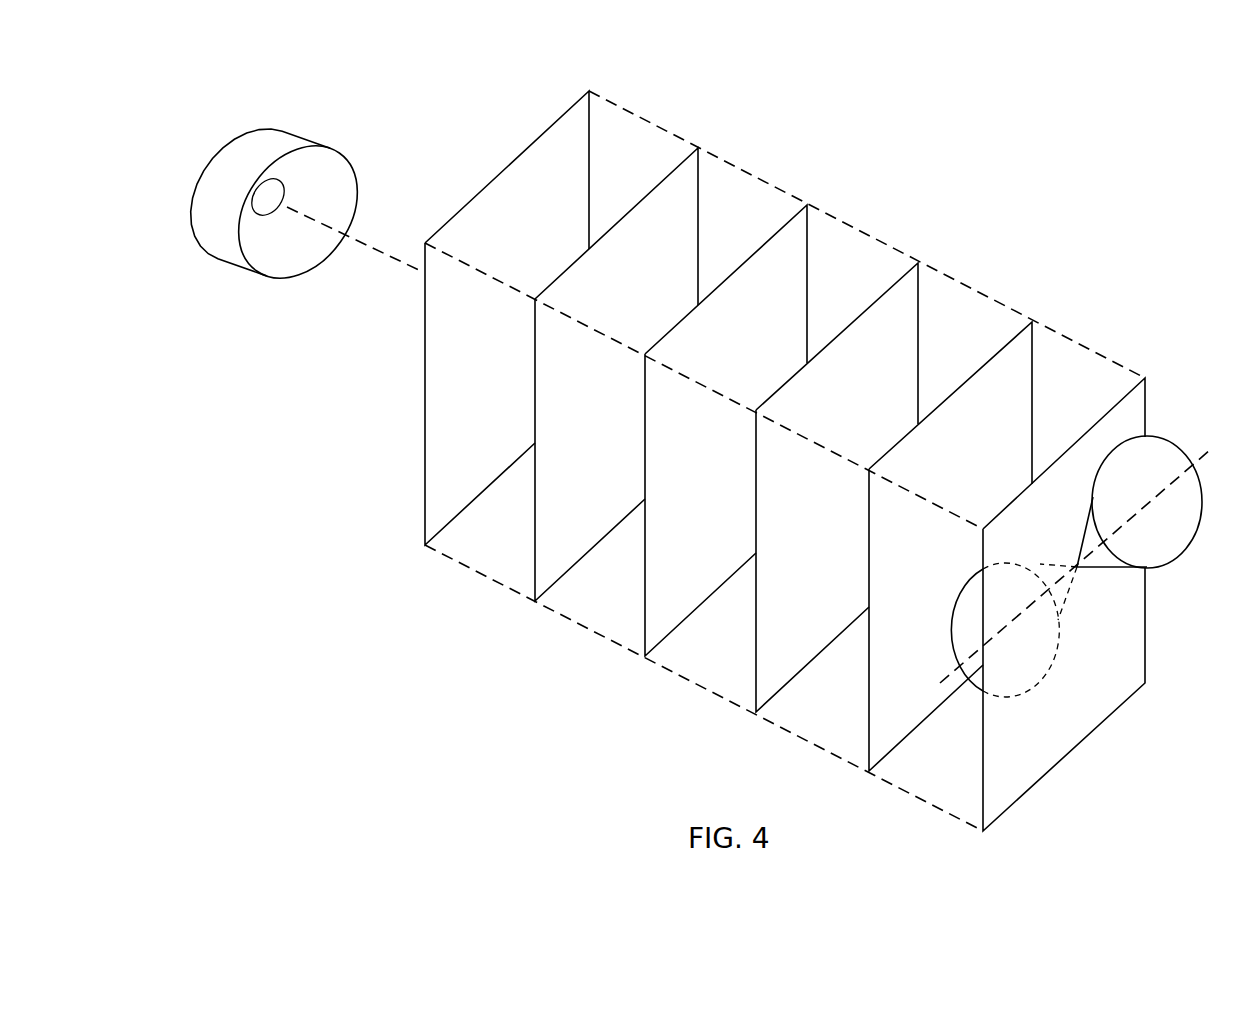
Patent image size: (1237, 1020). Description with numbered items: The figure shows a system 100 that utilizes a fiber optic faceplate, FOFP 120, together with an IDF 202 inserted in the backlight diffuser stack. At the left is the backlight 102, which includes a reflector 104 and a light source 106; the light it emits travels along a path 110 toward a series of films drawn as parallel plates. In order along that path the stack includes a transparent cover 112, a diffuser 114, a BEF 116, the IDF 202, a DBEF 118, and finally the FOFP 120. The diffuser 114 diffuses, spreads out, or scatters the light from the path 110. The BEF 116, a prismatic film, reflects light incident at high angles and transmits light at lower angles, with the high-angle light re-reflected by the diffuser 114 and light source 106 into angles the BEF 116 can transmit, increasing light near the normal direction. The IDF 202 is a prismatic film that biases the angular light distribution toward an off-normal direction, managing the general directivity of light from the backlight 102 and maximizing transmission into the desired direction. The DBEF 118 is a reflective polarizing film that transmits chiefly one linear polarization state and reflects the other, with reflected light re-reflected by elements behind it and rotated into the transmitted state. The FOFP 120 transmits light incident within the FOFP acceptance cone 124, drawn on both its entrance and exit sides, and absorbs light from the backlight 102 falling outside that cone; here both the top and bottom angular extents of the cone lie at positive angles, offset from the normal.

The system 100 is at (942, 129).
The backlight 102 is at (325, 133).
The reflector 104 is at (216, 240).
The light source 106 is at (276, 190).
The path 110 is at (366, 248).
The transparent cover 112 is at (528, 148).
The diffuser 114 is at (675, 162).
The BEF 116 is at (784, 222).
The IDF 202 is at (895, 277).
The DBEF 118 is at (1008, 337).
The FOFP 120 is at (1118, 397).
The FOFP acceptance cone 124 is at (1105, 563).